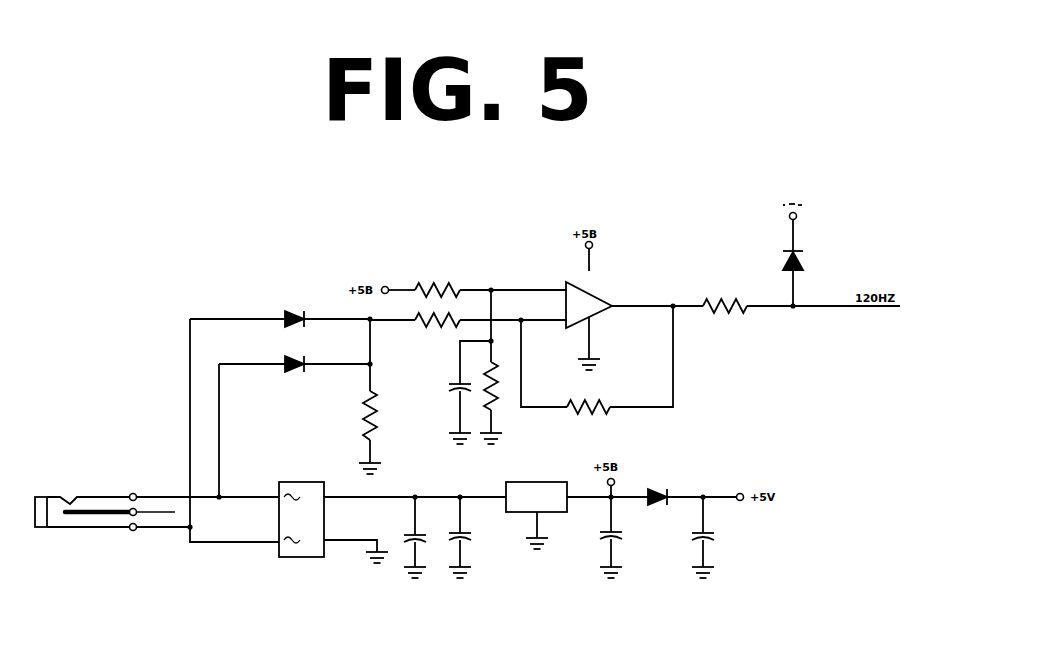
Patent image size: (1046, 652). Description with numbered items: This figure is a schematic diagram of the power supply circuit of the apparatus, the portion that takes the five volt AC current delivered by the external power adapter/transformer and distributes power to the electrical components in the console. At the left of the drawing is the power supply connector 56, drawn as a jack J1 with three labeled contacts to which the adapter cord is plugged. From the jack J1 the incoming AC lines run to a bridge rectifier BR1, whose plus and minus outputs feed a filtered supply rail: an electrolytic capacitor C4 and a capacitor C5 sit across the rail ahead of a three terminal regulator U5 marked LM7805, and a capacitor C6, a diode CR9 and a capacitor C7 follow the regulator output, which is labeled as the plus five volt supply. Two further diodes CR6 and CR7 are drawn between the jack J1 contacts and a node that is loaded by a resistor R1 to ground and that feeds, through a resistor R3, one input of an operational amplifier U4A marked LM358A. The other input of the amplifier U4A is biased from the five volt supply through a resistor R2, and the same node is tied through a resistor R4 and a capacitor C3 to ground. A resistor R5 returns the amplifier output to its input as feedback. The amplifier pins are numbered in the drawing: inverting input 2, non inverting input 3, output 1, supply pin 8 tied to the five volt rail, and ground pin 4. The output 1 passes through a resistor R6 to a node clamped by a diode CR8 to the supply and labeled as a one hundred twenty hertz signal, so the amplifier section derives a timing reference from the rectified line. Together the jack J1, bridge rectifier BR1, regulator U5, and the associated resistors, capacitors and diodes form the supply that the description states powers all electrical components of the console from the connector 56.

The power supply connector 56 is at (40, 492).
The audio jack connector J1 is at (98, 516).
The bridge rectifier BR1 is at (301, 513).
The resistor 10K R1 is at (357, 419).
The resistor 22K R2 is at (438, 285).
The resistor 10K R3 is at (438, 315).
The resistor 1.8K R4 is at (503, 388).
The resistor 1.0M R5 is at (592, 403).
The resistor 1.0K R6 is at (727, 301).
The capacitor 100nF C3 is at (442, 389).
The electrolytic capacitor C4 is at (403, 549).
The capacitor 100nF C5 is at (477, 536).
The capacitor 100nF C6 is at (595, 536).
The capacitor .33F C7 is at (713, 530).
The diode 1N4148 CR6 is at (268, 320).
The diode 1N4148 CR7 is at (268, 365).
The diode 1N4148 CR8 is at (814, 262).
The diode 1N4002 CR9 is at (655, 499).
The op amp LM358A U4A is at (612, 300).
The voltage regulator LM7805 U5 is at (536, 497).
The op amp output pin 1 is at (657, 299).
The op amp inverting input pin 2 is at (513, 283).
The op amp non-inverting input pin 3 is at (513, 313).
The op amp ground pin 4 is at (590, 343).
The op amp supply pin 8 is at (593, 261).